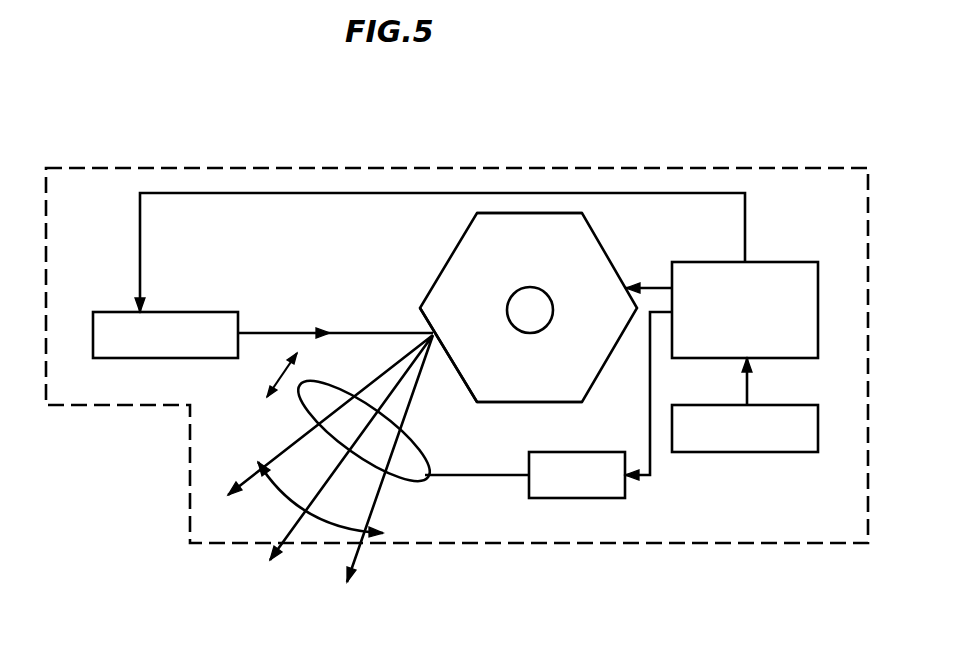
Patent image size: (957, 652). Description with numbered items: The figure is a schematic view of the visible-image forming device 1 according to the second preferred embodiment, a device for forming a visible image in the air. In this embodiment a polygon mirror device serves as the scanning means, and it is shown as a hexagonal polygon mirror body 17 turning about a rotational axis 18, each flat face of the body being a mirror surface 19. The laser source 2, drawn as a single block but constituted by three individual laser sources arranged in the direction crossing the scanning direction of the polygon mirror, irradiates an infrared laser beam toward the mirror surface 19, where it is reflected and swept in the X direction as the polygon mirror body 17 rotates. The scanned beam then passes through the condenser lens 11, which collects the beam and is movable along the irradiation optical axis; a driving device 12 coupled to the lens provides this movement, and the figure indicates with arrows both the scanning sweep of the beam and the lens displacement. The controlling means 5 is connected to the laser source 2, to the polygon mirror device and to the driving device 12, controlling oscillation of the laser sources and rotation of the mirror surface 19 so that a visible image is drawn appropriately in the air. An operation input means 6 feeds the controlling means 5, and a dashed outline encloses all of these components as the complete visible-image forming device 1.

The visible-image forming device 1 is at (522, 165).
The laser source 2 is at (143, 356).
The controlling means 5 is at (763, 273).
The operation input means 6 is at (745, 442).
The condenser lens 11 is at (405, 468).
The driving device 12 is at (585, 490).
The polygon mirror body 17 is at (593, 258).
The rotational axis 18 is at (522, 302).
The mirror surface 19 is at (465, 228).